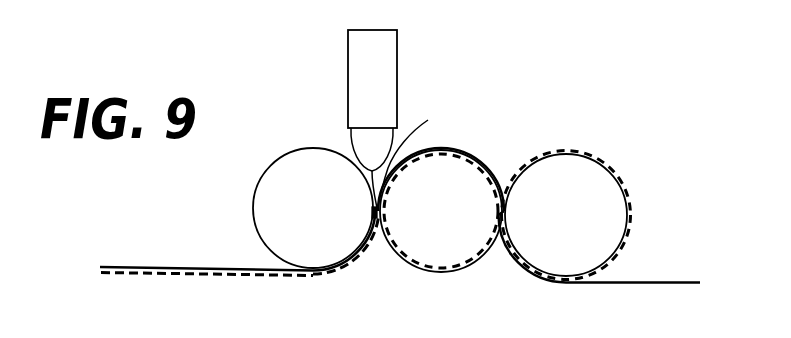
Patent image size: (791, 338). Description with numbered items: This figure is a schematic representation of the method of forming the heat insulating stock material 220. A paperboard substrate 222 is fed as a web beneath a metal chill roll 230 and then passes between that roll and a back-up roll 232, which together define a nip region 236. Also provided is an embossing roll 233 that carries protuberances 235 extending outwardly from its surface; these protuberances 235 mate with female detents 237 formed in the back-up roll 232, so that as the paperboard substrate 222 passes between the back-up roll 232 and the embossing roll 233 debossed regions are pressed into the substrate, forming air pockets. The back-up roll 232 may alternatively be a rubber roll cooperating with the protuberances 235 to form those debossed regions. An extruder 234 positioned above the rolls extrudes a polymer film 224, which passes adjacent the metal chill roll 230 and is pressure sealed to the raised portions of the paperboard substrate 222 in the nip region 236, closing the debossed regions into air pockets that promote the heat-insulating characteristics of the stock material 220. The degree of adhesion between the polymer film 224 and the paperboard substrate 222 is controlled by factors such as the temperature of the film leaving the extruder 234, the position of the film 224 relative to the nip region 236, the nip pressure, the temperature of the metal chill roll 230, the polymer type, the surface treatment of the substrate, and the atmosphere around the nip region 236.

The heat insulating stock material 220 is at (146, 268).
The paperboard substrate 222 is at (662, 284).
The polymer film 224 is at (422, 156).
The metal chill roll 230 is at (291, 164).
The back-up roll 232 is at (417, 258).
The embossing roll 233 is at (591, 168).
The extruder 234 is at (390, 75).
The protuberances 235 is at (622, 183).
The nip region 236 is at (372, 213).
The female detents 237 is at (490, 178).